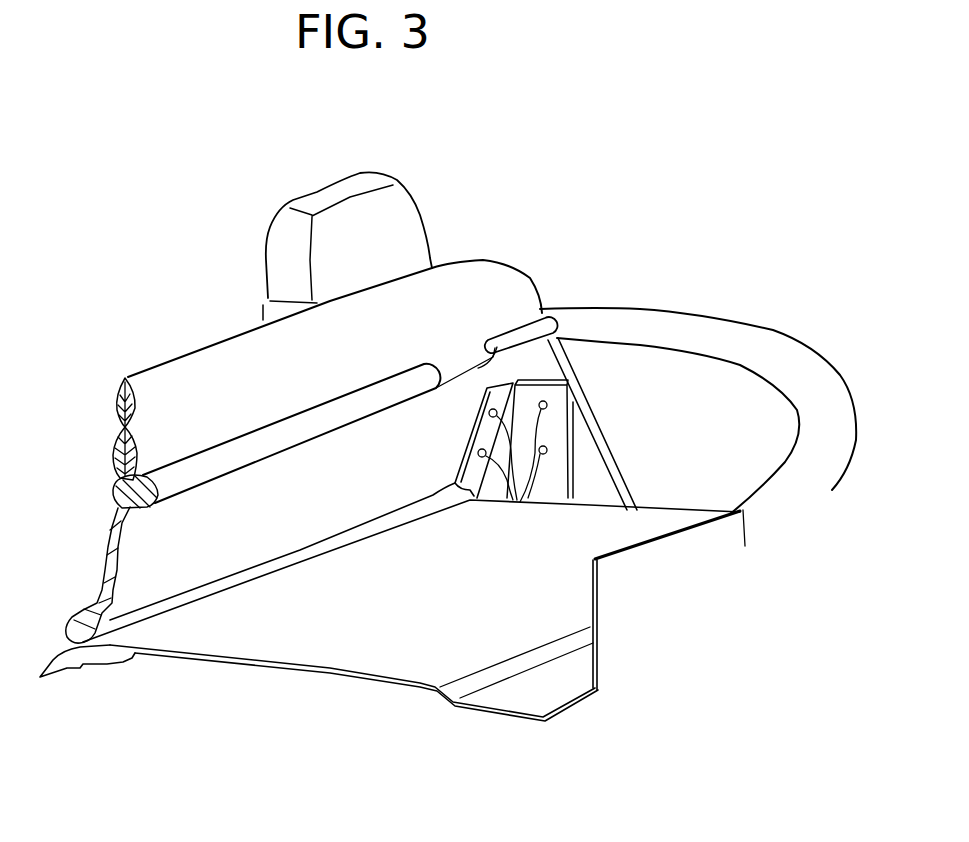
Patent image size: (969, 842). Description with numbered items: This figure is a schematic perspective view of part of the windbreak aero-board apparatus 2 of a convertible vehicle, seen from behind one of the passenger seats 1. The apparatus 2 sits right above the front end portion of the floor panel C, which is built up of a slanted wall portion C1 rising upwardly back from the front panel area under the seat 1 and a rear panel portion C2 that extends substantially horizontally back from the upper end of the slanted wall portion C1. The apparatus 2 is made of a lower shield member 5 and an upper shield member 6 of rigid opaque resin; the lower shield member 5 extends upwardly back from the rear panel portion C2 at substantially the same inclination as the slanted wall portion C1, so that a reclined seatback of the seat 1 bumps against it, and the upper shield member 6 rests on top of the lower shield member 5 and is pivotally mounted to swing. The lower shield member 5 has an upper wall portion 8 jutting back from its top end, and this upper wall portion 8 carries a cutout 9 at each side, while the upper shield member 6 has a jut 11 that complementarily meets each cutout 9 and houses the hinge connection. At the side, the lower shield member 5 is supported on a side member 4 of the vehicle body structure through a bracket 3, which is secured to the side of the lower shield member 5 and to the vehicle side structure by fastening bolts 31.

The passenger seat 1 is at (277, 238).
The windbreak aero-board apparatus 2 is at (563, 302).
The bracket 3 is at (561, 413).
The side member 4 is at (678, 426).
The lower shield member 5 is at (102, 570).
The upper shield member 6 is at (198, 380).
The upper wall portion 8 is at (157, 503).
The cutout 9 is at (427, 373).
The jut 11 is at (468, 368).
The fastening bolt 31 is at (535, 458).
The floor panel C is at (193, 670).
The slanted wall portion C1 is at (63, 673).
The rear panel portion C2 is at (325, 673).